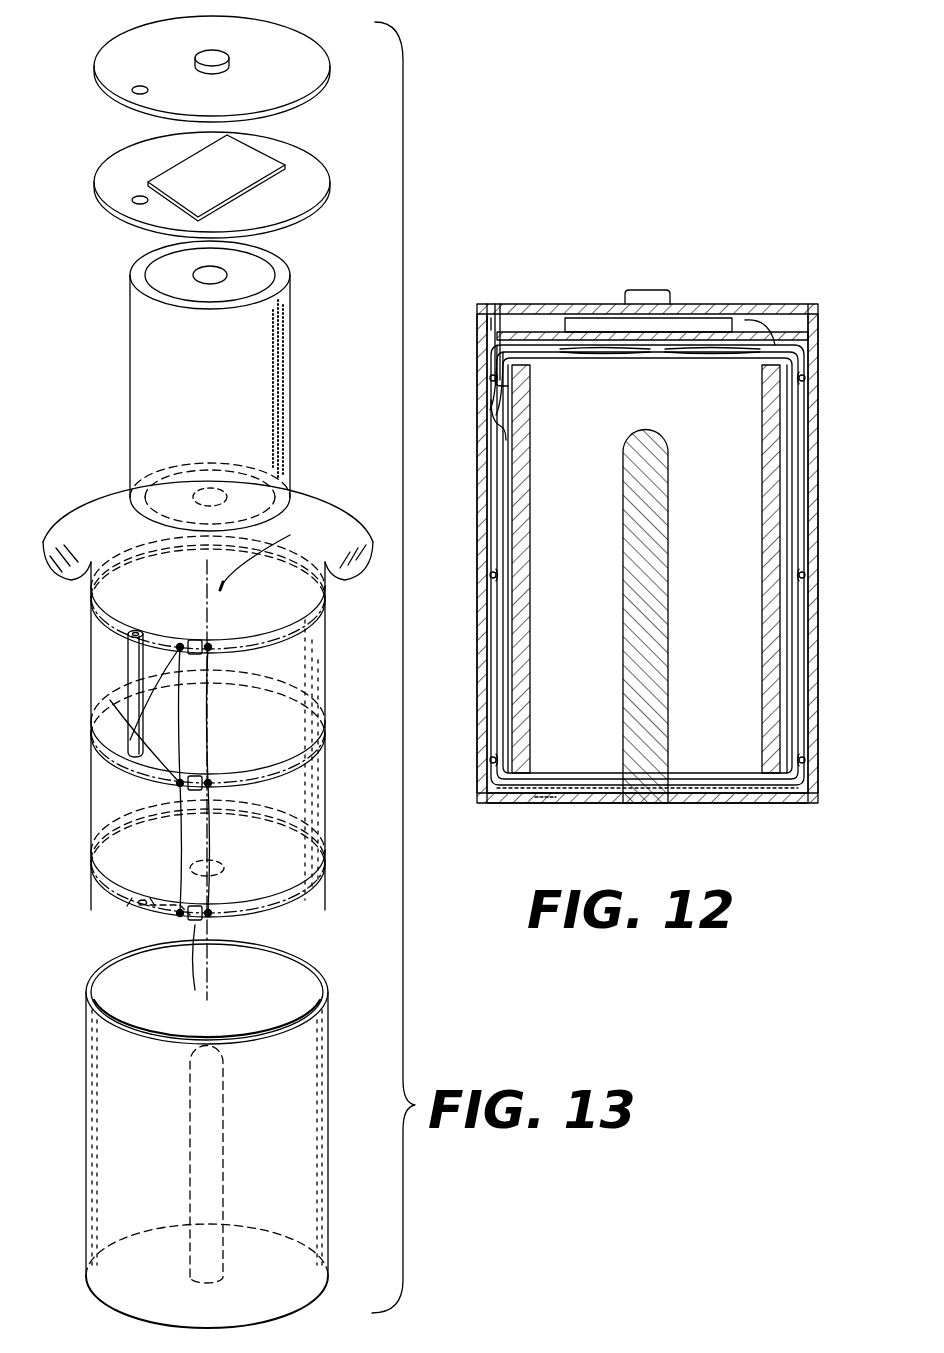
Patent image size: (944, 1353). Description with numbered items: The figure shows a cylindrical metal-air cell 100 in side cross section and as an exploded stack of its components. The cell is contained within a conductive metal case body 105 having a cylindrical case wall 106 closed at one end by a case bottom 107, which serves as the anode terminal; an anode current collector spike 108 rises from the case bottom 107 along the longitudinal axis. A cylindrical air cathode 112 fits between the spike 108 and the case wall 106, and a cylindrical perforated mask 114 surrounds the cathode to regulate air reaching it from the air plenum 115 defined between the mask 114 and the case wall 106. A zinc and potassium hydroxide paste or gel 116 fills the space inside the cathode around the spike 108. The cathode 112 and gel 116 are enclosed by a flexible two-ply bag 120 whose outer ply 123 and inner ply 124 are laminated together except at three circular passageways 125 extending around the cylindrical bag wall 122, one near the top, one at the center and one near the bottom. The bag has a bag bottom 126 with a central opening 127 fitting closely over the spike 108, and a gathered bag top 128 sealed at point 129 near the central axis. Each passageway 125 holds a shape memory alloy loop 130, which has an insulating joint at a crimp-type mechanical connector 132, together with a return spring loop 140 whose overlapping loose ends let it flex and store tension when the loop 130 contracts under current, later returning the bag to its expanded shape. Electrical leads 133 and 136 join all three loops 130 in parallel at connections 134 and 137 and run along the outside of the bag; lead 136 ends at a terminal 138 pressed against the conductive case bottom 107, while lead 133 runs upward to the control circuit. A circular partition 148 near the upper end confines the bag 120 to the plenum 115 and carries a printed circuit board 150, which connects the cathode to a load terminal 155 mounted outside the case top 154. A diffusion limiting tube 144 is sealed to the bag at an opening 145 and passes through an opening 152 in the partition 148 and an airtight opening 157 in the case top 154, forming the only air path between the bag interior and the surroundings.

In FIG. 12, the cylindrical metal-air cell 100 is at (545, 243).
In FIG. 13, the cylindrical case body 105 is at (332, 1022).
In FIG. 12, the cylindrical case body 105 is at (478, 575).
In FIG. 13, the cylindrical case wall 106 is at (86, 1155).
In FIG. 12, the cylindrical case wall 106 is at (478, 760).
In FIG. 13, the case bottom 107 is at (290, 1262).
In FIG. 12, the case bottom 107 is at (705, 805).
In FIG. 13, the anode current collector spike 108 is at (218, 1125).
In FIG. 12, the anode current collector spike 108 is at (660, 630).
In FIG. 13, the cylindrical air cathode 112 is at (282, 268).
In FIG. 12, the cylindrical air cathode 112 is at (514, 528).
In FIG. 13, the cylindrical perforated mask 114 is at (285, 357).
In FIG. 12, the cylindrical perforated mask 114 is at (505, 658).
In FIG. 12, the air plenum 115 is at (497, 712).
In FIG. 12, the anode paste or gel 116 is at (728, 507).
In FIG. 13, the flexible bag 120 is at (110, 920).
In FIG. 12, the flexible bag 120 is at (775, 345).
In FIG. 13, the cylindrical bag wall 122 is at (327, 680).
In FIG. 12, the outer ply 123 is at (491, 690).
In FIG. 12, the inner ply 124 is at (503, 705).
In FIG. 12, the passageways 125 is at (512, 382).
In FIG. 13, the bag bottom 126 is at (290, 865).
In FIG. 12, the bag bottom 126 is at (710, 790).
In FIG. 13, the central opening 127 is at (214, 862).
In FIG. 12, the central opening 127 is at (620, 778).
In FIG. 13, the gathered bag top 128 is at (105, 505).
In FIG. 12, the gathered bag top 128 is at (725, 352).
In FIG. 12, the sealing point 129 is at (652, 352).
In FIG. 13, the shape memory alloy loop 130 is at (322, 632).
In FIG. 12, the shape memory alloy loop 130 is at (806, 378).
In FIG. 13, the mechanical connector 132 is at (195, 925).
In FIG. 13, the electrical lead 133 is at (225, 590).
In FIG. 12, the electrical lead 133 is at (770, 348).
In FIG. 13, the electrical connection 134 is at (212, 648).
In FIG. 13, the electrical lead 136 is at (178, 900).
In FIG. 13, the electrical connection 137 is at (180, 783).
In FIG. 13, the terminal 138 is at (140, 905).
In FIG. 12, the terminal 138 is at (540, 803).
In FIG. 13, the return spring loop 140 is at (328, 648).
In FIG. 12, the return spring loop 140 is at (806, 385).
In FIG. 13, the diffusion limiting tube 144 is at (128, 672).
In FIG. 12, the diffusion limiting tube 144 is at (492, 402).
In FIG. 13, the opening in the bag 145 is at (180, 783).
In FIG. 12, the opening in the bag 145 is at (497, 422).
In FIG. 13, the circular partition 148 is at (305, 170).
In FIG. 12, the circular partition 148 is at (540, 332).
In FIG. 13, the printed circuit board 150 is at (238, 189).
In FIG. 12, the printed circuit board 150 is at (700, 322).
In FIG. 13, the opening in the partition 152 is at (140, 200).
In FIG. 12, the opening in the partition 152 is at (488, 328).
In FIG. 13, the case top 154 is at (145, 52).
In FIG. 12, the case top 154 is at (595, 304).
In FIG. 13, the load terminal 155 is at (220, 62).
In FIG. 12, the load terminal 155 is at (650, 292).
In FIG. 13, the opening in the case top 157 is at (140, 86).
In FIG. 12, the opening in the case top 157 is at (497, 340).